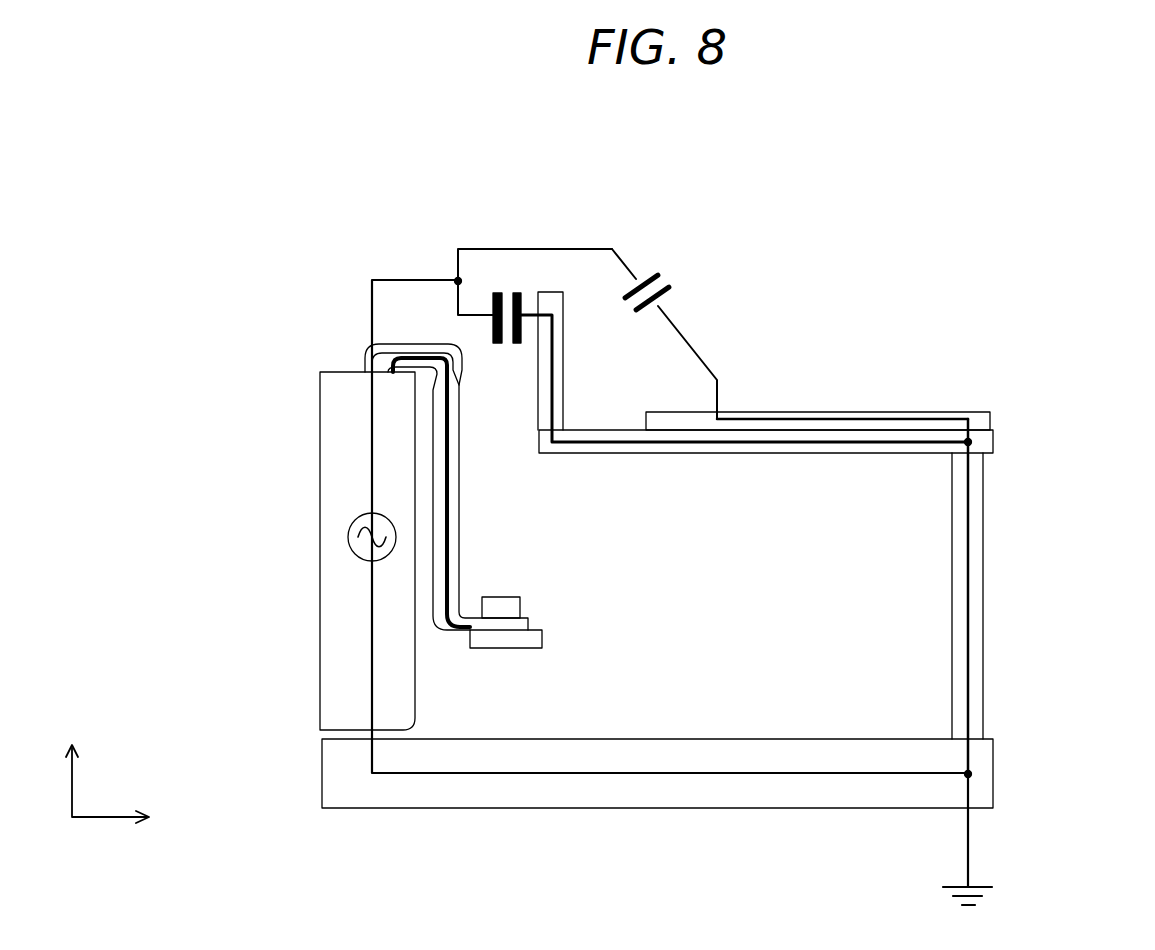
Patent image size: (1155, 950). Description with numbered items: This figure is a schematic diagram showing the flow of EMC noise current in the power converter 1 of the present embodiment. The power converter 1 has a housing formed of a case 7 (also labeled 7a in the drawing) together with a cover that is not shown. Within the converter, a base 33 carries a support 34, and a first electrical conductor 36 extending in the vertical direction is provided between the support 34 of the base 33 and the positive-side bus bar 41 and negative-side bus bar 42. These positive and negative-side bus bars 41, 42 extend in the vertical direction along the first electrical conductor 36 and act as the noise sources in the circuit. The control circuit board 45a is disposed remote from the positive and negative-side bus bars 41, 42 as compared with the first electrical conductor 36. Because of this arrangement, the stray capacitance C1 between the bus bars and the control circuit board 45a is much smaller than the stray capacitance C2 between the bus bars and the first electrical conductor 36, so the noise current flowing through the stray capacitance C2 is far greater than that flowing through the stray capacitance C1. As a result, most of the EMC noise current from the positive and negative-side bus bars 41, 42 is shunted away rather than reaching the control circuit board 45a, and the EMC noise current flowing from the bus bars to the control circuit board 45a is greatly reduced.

The power converter 1 is at (616, 166).
The case 7 is at (657, 826).
The stage base 7a is at (695, 785).
The base 33 is at (1047, 596).
The support 34 is at (993, 443).
The first electrical conductor 36 is at (560, 367).
The positive-side bus bar 41 is at (430, 352).
The negative-side bus bar 42 is at (400, 352).
The control circuit board 45a is at (960, 412).
The stray capacitance C1 is at (664, 321).
The stray capacitance C2 is at (513, 353).